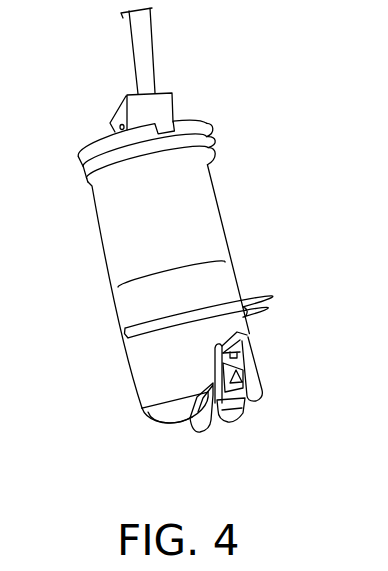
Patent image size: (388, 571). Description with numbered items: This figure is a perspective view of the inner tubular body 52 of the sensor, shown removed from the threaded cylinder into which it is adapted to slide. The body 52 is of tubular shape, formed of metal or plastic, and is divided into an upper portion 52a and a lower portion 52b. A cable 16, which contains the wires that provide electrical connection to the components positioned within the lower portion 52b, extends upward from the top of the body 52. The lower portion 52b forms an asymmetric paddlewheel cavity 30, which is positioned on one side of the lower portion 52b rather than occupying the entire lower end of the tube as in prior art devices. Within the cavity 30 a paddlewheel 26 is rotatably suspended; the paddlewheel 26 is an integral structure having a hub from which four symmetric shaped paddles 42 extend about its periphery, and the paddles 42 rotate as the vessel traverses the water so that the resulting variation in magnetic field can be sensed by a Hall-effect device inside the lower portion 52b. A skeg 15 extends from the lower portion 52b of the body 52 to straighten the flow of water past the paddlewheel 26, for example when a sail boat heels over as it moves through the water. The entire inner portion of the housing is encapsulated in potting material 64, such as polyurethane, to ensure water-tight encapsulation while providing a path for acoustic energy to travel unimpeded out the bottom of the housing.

The cable 16 is at (151, 52).
The tubular body 52 is at (117, 425).
The upper portion 52a is at (218, 208).
The lower portion 52b is at (234, 283).
The potting material 64 is at (163, 415).
The skeg 15 is at (200, 430).
The paddlewheel cavity 30 is at (248, 340).
The paddlewheel 26 is at (240, 372).
The paddles 42 is at (230, 424).